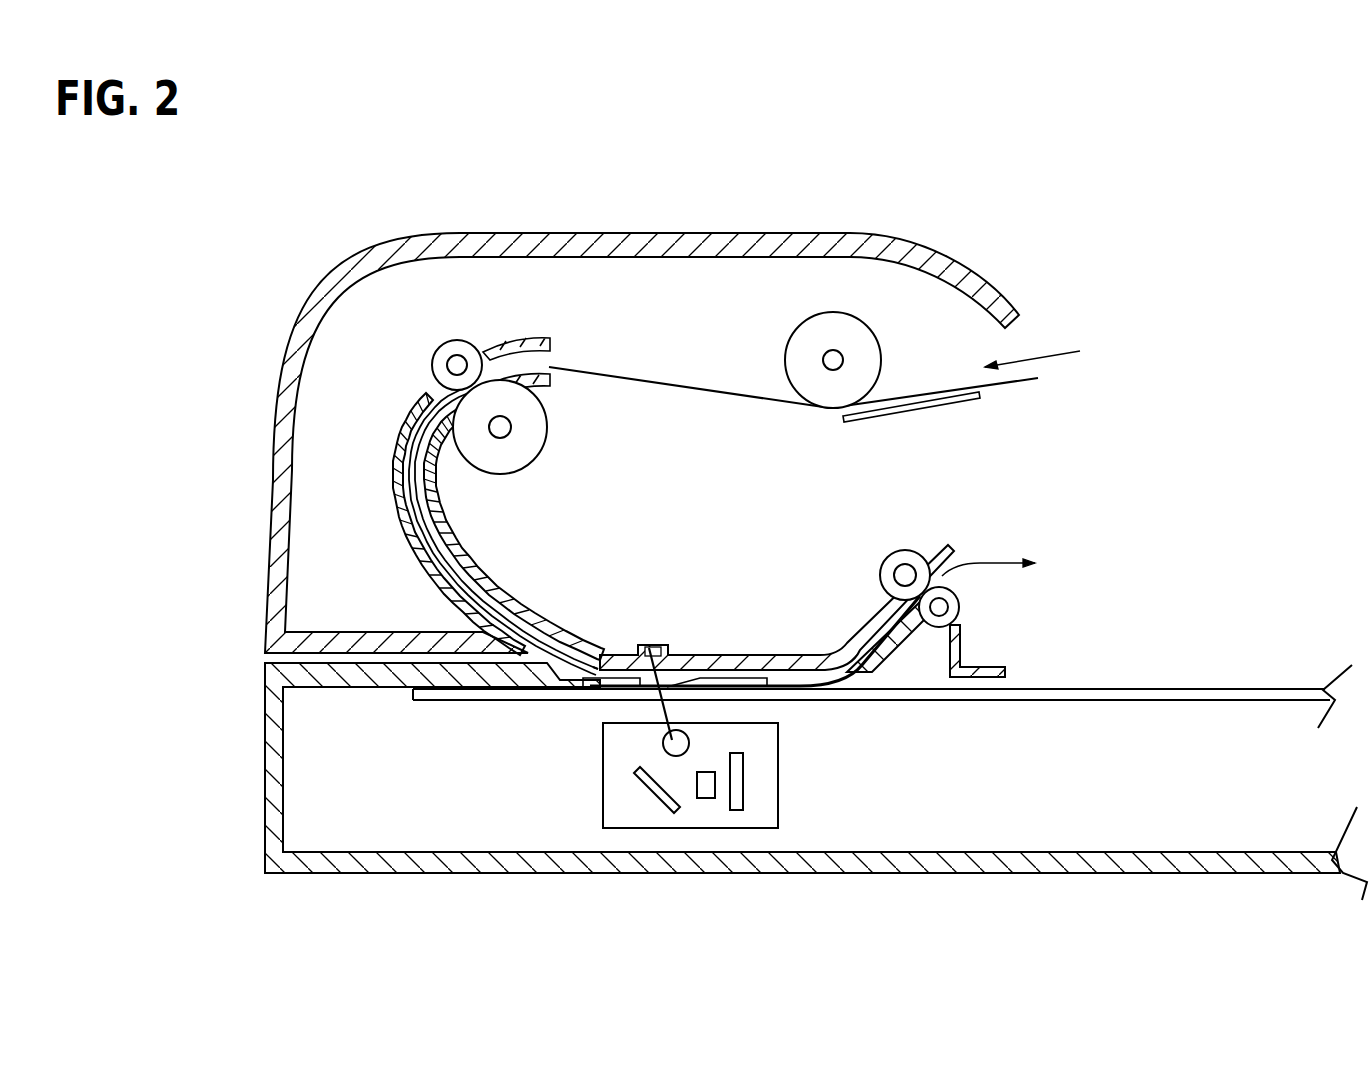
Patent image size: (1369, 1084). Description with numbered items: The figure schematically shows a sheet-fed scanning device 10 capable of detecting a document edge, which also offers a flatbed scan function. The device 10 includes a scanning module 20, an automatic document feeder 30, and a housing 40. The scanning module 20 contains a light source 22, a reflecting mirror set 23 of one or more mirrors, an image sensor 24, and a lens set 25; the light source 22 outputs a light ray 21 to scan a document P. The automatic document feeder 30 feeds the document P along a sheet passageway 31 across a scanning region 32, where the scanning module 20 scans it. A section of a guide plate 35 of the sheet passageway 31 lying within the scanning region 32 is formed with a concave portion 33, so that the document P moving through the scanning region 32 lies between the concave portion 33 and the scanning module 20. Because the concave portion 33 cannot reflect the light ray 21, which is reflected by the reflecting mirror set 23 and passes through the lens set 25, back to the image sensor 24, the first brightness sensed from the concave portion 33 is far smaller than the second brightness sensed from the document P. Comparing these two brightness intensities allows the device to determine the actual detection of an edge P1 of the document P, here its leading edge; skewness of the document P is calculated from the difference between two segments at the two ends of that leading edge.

The sheet-fed scanning device 10 is at (707, 177).
The scanning module 20 is at (770, 780).
The light ray 21 is at (670, 712).
The light source 22 is at (663, 741).
The reflecting mirror set 23 is at (643, 789).
The image sensor 24 is at (742, 796).
The lens set 25 is at (705, 800).
The automatic document feeder 30 is at (280, 352).
The sheet passageway 31 is at (435, 578).
The scanning region 32 is at (660, 712).
The concave portion 33 is at (672, 650).
The guide plate 35 is at (498, 595).
The housing 40 is at (257, 739).
The document P is at (415, 510).
The edge P1 is at (598, 668).